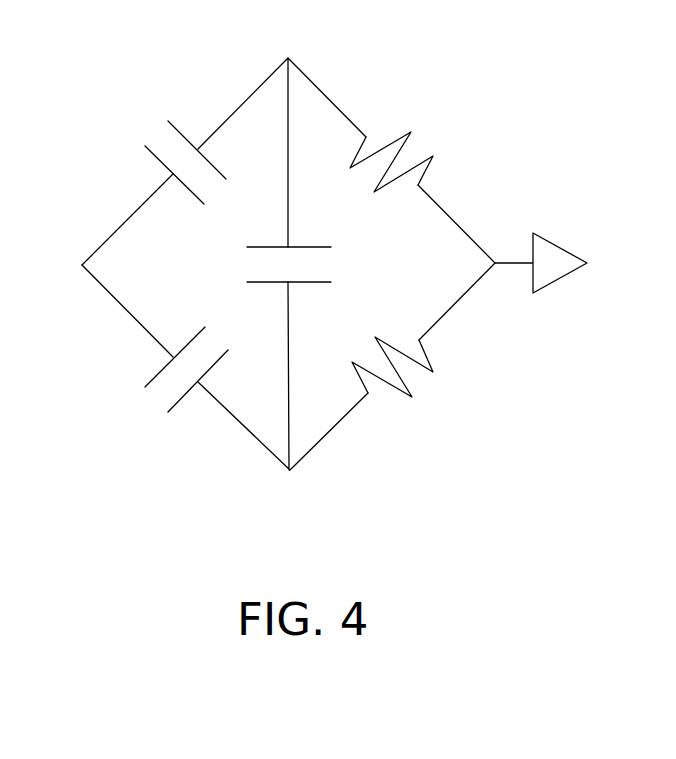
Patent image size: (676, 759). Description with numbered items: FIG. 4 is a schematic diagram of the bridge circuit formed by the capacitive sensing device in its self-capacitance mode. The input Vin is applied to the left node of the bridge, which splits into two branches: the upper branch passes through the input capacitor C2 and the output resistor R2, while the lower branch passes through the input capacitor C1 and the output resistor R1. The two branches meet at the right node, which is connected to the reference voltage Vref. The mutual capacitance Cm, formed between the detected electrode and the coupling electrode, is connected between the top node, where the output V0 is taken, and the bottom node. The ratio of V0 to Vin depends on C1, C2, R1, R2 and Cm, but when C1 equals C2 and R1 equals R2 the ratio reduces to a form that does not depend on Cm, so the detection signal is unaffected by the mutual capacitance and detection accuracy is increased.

The input capacitor C1 is at (175, 381).
The input capacitor C2 is at (173, 149).
The output resistor R1 is at (404, 382).
The output resistor R2 is at (406, 147).
The mutual capacitance Cm is at (322, 264).
The input voltage Vin is at (53, 263).
The output voltage V0 is at (287, 35).
The reference voltage Vref is at (574, 263).